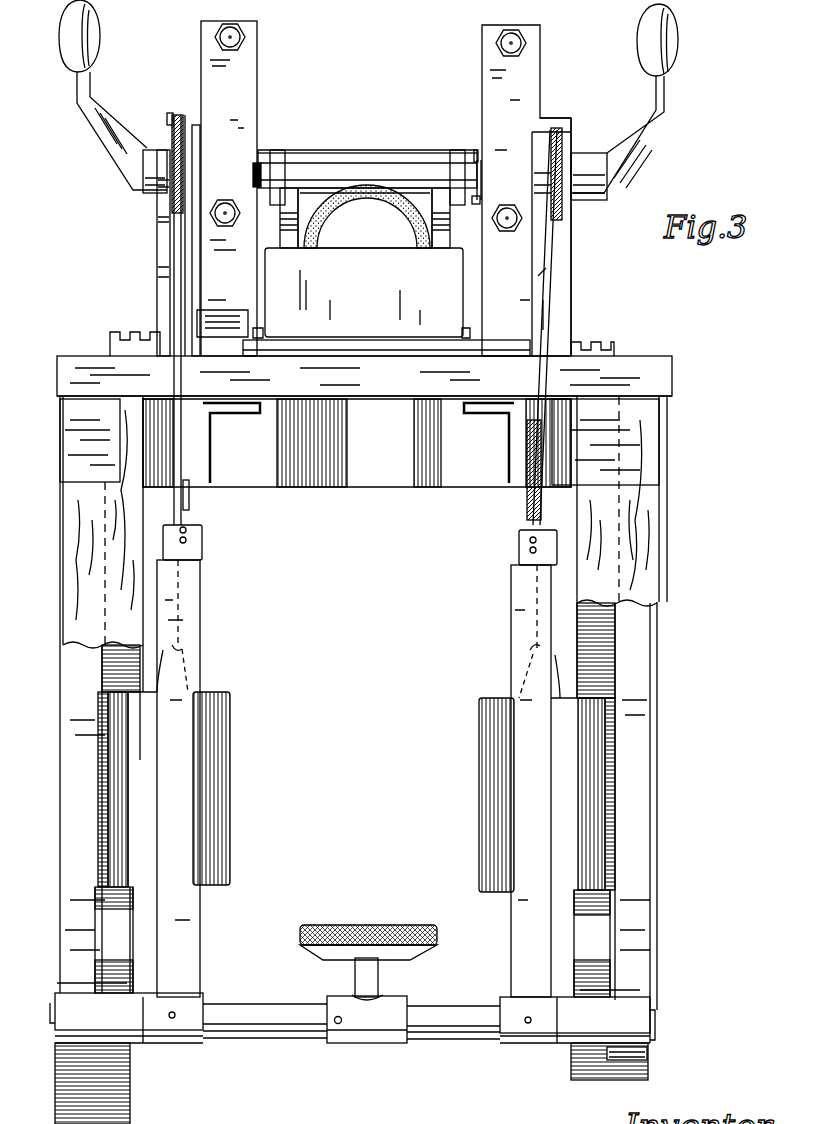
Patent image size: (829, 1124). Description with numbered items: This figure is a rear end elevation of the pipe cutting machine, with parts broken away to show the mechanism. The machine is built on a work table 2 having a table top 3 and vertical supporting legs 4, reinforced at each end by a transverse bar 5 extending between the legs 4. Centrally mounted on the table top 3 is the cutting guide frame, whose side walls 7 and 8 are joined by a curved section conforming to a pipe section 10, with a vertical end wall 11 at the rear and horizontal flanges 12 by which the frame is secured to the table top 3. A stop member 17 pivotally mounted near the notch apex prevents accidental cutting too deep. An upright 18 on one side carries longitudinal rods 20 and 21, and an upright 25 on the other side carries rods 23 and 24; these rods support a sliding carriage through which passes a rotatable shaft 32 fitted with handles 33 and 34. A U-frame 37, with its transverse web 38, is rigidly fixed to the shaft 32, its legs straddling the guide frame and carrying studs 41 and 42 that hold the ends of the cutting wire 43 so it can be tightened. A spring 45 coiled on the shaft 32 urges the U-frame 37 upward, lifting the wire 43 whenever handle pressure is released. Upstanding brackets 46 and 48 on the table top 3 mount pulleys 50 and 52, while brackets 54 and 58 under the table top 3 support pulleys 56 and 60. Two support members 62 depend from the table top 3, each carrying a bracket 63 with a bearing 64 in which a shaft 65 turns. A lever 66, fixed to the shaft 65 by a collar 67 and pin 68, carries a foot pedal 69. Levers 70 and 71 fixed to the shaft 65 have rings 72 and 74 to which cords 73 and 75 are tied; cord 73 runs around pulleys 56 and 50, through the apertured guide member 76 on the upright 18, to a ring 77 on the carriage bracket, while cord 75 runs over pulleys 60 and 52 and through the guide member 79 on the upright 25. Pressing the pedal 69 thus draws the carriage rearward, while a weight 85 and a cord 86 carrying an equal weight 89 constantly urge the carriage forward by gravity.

The work table 2 is at (655, 363).
The table top 3 is at (650, 380).
The vertical supporting legs 4 is at (100, 674).
The bar 5 is at (80, 432).
The side wall 7 is at (283, 209).
The side wall 8 is at (436, 244).
The pipe section 10 is at (398, 223).
The vertical end wall 11 is at (373, 299).
The horizontal flanges 12 is at (397, 353).
The stop member 17 is at (542, 275).
The upright 18 is at (240, 107).
The longitudinal rod 20 is at (248, 37).
The longitudinal rod 21 is at (238, 261).
The longitudinal rod 23 is at (529, 43).
The longitudinal rod 24 is at (520, 268).
The upright 25 is at (482, 72).
The shaft 32 is at (348, 165).
The handle 33 is at (106, 144).
The handle 34 is at (666, 93).
The U-frame 37 is at (310, 144).
The transverse web 38 is at (393, 160).
The stud 41 is at (252, 168).
The stud 42 is at (480, 167).
The cutting wire 43 is at (365, 218).
The spring 45 is at (474, 158).
The bracket 46 is at (157, 237).
The bracket 48 is at (568, 290).
The pulley 50 is at (168, 134).
The pulley 52 is at (568, 141).
The bracket 54 is at (205, 425).
The pulley 56 is at (190, 515).
The bracket 58 is at (512, 432).
The pulley 60 is at (524, 505).
The support member 62 is at (62, 927).
The bracket 63 is at (70, 982).
The bearing 64 is at (125, 1023).
The shaft 65 is at (240, 1033).
The lever 66 is at (356, 975).
The collar 67 is at (385, 1043).
The pin 68 is at (335, 1020).
The foot pedal 69 is at (370, 925).
The lever 70 is at (185, 935).
The lever 71 is at (510, 920).
The ring 72 is at (205, 533).
The cord 73 is at (185, 290).
The ring 74 is at (517, 545).
The cord 75 is at (548, 248).
The apertured guide member 76 is at (185, 115).
The ring 77 is at (173, 298).
The apertured guide member 79 is at (545, 118).
The weight 85 is at (232, 727).
The cord 86 is at (545, 318).
The weight 89 is at (485, 725).